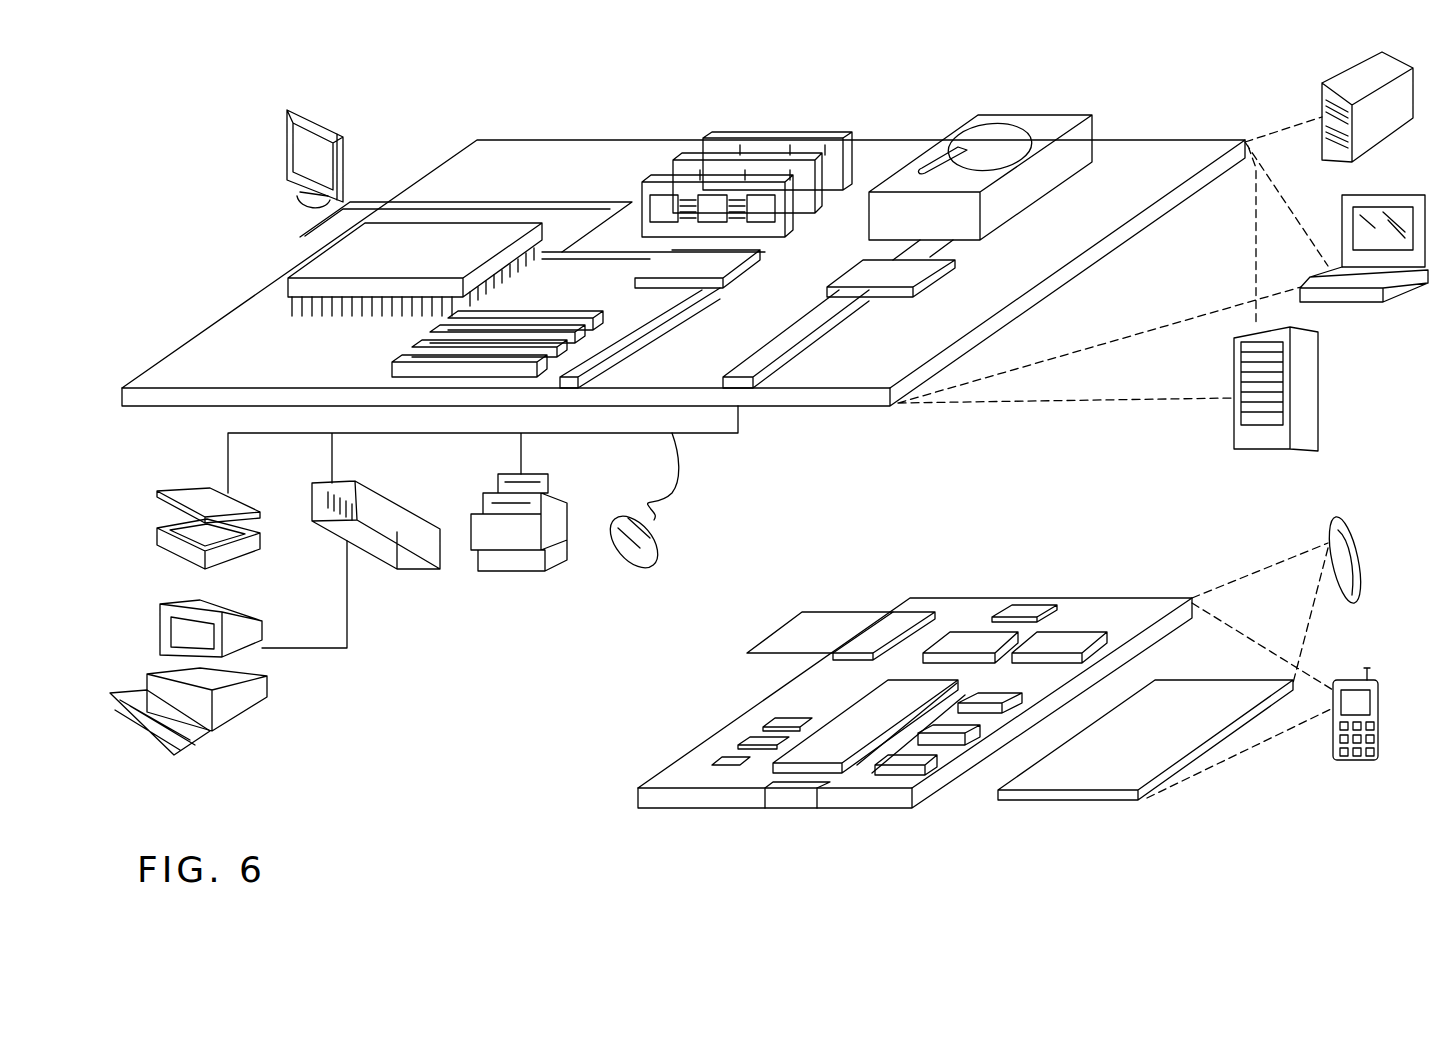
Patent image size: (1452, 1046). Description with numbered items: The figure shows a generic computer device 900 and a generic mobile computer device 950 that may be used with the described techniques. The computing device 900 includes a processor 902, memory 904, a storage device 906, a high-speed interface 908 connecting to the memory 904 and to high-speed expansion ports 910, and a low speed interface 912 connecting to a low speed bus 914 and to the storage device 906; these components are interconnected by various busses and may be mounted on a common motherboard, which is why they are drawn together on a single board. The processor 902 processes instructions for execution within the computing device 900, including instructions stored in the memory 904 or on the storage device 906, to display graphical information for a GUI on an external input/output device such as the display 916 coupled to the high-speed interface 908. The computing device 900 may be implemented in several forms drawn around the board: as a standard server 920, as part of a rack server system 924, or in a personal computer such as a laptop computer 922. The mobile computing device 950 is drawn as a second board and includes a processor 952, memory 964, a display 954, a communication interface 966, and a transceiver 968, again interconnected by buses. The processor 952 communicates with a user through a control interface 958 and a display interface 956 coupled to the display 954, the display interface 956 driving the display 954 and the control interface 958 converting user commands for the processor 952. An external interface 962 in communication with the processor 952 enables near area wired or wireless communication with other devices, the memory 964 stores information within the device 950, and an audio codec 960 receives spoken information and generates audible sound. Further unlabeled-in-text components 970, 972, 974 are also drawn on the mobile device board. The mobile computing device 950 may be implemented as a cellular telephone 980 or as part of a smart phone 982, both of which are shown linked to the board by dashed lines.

The computing device 900 is at (427, 88).
The processor 902 is at (316, 264).
The memory 904 is at (782, 137).
The storage device 906 is at (1022, 113).
The high-speed interface 908 is at (725, 268).
The high-speed expansion ports 910 is at (421, 349).
The low speed interface 912 is at (862, 271).
The low speed bus 914 is at (744, 370).
The display 916 is at (290, 107).
The standard server 920 is at (1342, 80).
The laptop computer 922 is at (1400, 192).
The rack server system 924 is at (1320, 392).
The mobile computer device 950 is at (595, 813).
The processor 952 is at (828, 737).
The display 954 is at (1188, 698).
The display interface 956 is at (930, 766).
The control interface 958 is at (960, 736).
The audio codec 960 is at (996, 700).
The external interface 962 is at (792, 808).
The memory 964 is at (742, 745).
The communication interface 966 is at (972, 637).
The transceiver 968 is at (1068, 638).
The component 970 is at (1027, 605).
The plate 972 is at (893, 612).
The plate 974 is at (807, 612).
The cellular telephone 980 is at (1338, 512).
The smart phone 982 is at (1351, 677).